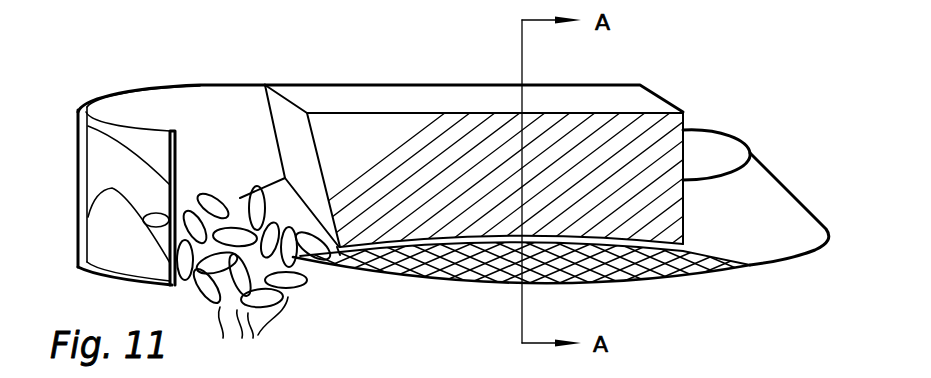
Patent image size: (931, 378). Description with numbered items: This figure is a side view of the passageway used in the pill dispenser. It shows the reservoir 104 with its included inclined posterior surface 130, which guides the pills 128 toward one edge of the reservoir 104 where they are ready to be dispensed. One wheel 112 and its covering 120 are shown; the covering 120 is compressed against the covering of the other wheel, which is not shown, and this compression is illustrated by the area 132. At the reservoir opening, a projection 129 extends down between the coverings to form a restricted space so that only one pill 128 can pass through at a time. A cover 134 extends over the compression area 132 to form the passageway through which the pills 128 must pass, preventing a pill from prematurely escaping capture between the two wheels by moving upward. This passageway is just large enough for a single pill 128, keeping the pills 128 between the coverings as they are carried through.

The reservoir 104 is at (76, 132).
The posterior surface 130 is at (82, 217).
The cover 134 is at (474, 127).
The wheel 112 is at (757, 88).
The covering 120 is at (808, 200).
The compression area 132 is at (594, 280).
The projection 129 is at (337, 247).
The pills 128 is at (256, 277).